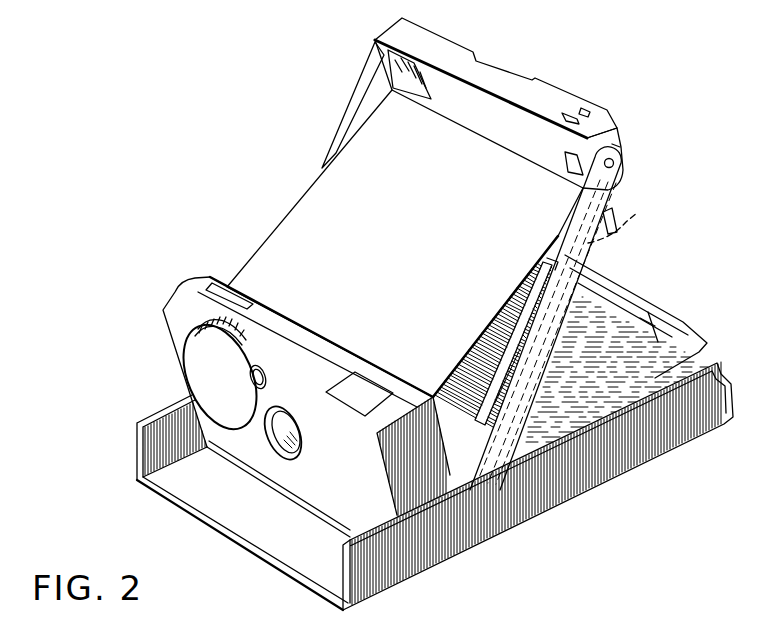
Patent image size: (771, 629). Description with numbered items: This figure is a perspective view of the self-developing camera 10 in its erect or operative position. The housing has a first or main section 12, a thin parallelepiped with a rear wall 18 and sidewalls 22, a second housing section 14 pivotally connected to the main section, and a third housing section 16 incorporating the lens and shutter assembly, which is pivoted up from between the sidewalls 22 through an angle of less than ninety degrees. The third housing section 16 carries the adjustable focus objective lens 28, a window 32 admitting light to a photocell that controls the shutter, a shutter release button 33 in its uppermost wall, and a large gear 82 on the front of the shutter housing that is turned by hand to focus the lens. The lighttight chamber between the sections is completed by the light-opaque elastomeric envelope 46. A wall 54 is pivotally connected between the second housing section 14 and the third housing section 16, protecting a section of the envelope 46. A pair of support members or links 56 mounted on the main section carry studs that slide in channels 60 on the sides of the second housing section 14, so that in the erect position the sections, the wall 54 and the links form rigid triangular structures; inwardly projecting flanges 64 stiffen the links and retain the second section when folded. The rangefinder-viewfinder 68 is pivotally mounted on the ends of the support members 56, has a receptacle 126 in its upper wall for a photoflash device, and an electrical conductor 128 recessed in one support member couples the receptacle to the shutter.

The self-developing camera 10 is at (313, 158).
The first or main housing section 12 is at (603, 489).
The second housing section 14 is at (655, 292).
The third housing section 16 is at (183, 290).
The rear wall 18 is at (297, 553).
The sidewalls 22 is at (173, 412).
The adjustable focus objective lens 28 is at (306, 446).
The window 32 is at (267, 373).
The shutter release button 33 is at (247, 262).
The envelope 46 is at (481, 367).
The wall 54 is at (401, 243).
The support members or links 56 is at (376, 78).
The channels or grooves 60 is at (647, 317).
The inwardly projecting flanges 64 is at (533, 327).
The rangefinder-viewfinder 68 is at (556, 91).
The large gear 82 is at (192, 353).
The receptacle 126 is at (577, 113).
The electrical conductor 128 is at (631, 219).